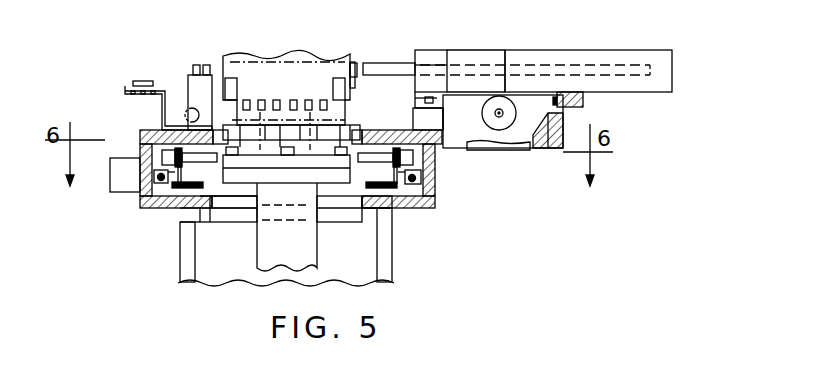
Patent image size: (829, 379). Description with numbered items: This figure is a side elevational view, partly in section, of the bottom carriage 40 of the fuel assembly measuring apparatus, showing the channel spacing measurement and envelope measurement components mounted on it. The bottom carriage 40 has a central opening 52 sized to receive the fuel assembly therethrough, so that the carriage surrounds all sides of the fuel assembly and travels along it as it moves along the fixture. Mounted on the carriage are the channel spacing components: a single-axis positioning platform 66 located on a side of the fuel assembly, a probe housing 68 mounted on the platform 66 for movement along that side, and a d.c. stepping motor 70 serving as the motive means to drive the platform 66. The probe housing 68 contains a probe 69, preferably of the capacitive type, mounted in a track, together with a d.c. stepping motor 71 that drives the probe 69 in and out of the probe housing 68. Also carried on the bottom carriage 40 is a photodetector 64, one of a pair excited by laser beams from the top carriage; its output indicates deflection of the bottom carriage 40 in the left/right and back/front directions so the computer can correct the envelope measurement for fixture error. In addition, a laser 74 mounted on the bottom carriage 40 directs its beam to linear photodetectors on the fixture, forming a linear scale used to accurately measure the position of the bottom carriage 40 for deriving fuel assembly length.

The bottom carriage 40 is at (136, 252).
The central opening 52 is at (219, 130).
The Z-Y axes photodetector 64 is at (152, 82).
The single-axis positioning platform 66 is at (584, 99).
The probe housing 68 is at (560, 52).
The probe 69 is at (385, 62).
The d.c. stepping motor 70 is at (504, 126).
The d.c. stepping motor 71 is at (457, 55).
The laser 74 is at (186, 112).